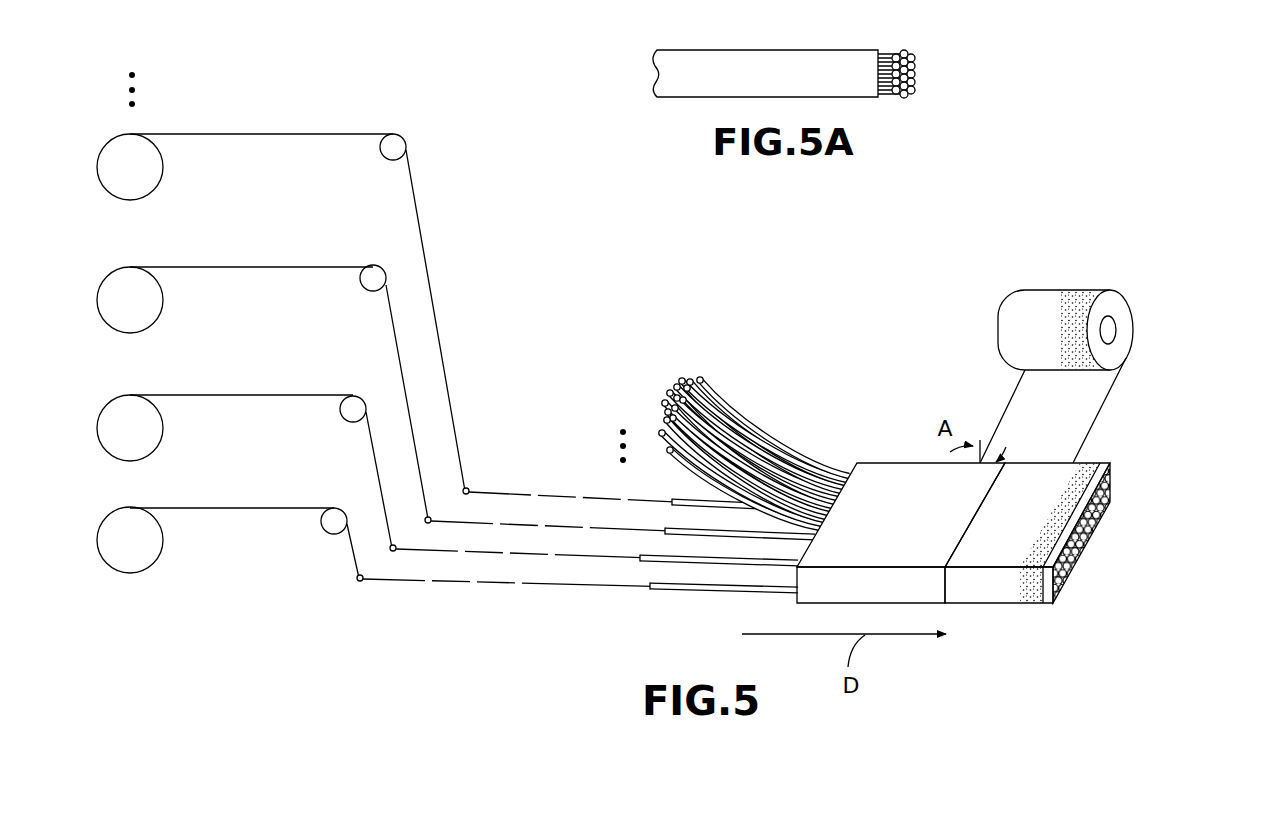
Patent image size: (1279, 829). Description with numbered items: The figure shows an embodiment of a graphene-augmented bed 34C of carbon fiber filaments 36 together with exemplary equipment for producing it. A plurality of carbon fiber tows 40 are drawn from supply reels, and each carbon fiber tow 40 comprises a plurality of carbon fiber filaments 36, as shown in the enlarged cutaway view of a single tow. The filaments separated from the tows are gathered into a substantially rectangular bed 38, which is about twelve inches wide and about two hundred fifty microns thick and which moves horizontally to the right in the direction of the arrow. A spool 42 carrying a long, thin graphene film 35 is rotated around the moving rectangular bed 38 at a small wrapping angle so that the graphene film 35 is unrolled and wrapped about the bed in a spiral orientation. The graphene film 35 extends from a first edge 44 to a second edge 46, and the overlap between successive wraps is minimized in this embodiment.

In FIG. 5A, the carbon fiber tow 40 is at (802, 58).
In FIG. 5, the carbon fiber tow 40 is at (358, 556).
In FIG. 5A, the carbon fiber filament 36 is at (915, 68).
In FIG. 5, the rectangular bed 38 is at (878, 484).
In FIG. 5, the spool 42 is at (1108, 328).
In FIG. 5, the first edge 44 is at (1112, 398).
In FIG. 5, the graphene film 35 is at (1025, 402).
In FIG. 5, the second edge 46 is at (1000, 432).
In FIG. 5, the graphene-augmented bed of carbon fiber filaments 34C is at (1095, 530).